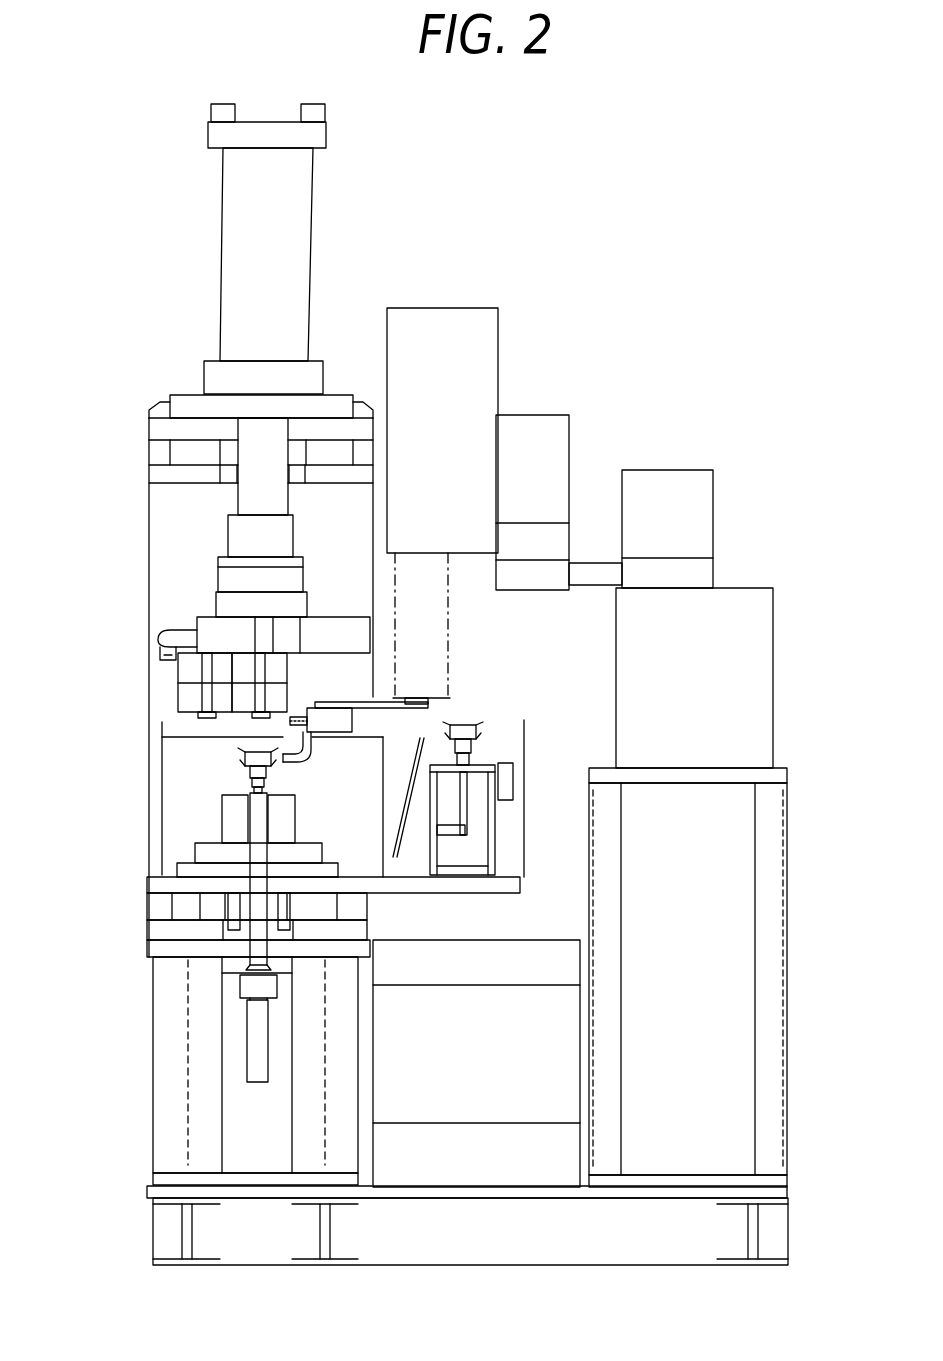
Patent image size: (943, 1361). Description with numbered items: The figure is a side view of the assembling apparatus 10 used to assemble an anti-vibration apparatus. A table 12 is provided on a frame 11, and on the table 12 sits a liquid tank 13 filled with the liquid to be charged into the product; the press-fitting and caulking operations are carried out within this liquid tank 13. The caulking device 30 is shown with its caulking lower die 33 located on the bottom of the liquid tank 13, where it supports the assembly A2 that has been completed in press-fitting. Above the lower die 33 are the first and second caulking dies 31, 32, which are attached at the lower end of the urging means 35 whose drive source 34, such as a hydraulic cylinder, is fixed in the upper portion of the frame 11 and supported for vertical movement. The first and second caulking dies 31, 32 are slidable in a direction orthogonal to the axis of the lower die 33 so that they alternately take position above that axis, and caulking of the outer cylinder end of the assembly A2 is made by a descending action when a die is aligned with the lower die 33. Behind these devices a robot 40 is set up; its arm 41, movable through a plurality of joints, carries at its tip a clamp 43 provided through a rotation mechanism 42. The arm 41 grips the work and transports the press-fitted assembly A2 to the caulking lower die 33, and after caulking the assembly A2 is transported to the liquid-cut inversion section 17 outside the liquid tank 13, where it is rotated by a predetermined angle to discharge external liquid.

The assembling apparatus 10 is at (553, 187).
The frame 11 is at (168, 1045).
The table 12 is at (173, 885).
The liquid tank 13 is at (168, 848).
The liquid-cut inversion section 17 is at (492, 752).
The caulking device 30 is at (172, 608).
The first caulking die 31 is at (183, 698).
The second caulking die 32 is at (278, 702).
The caulking lower die 33 is at (223, 807).
The drive source 34 is at (292, 235).
The urging means 35 is at (203, 300).
The robot 40 is at (742, 646).
The arm 41 is at (576, 393).
The rotation mechanism 42 is at (342, 723).
The clamp 43 is at (237, 742).
The assembly A2 is at (226, 774).